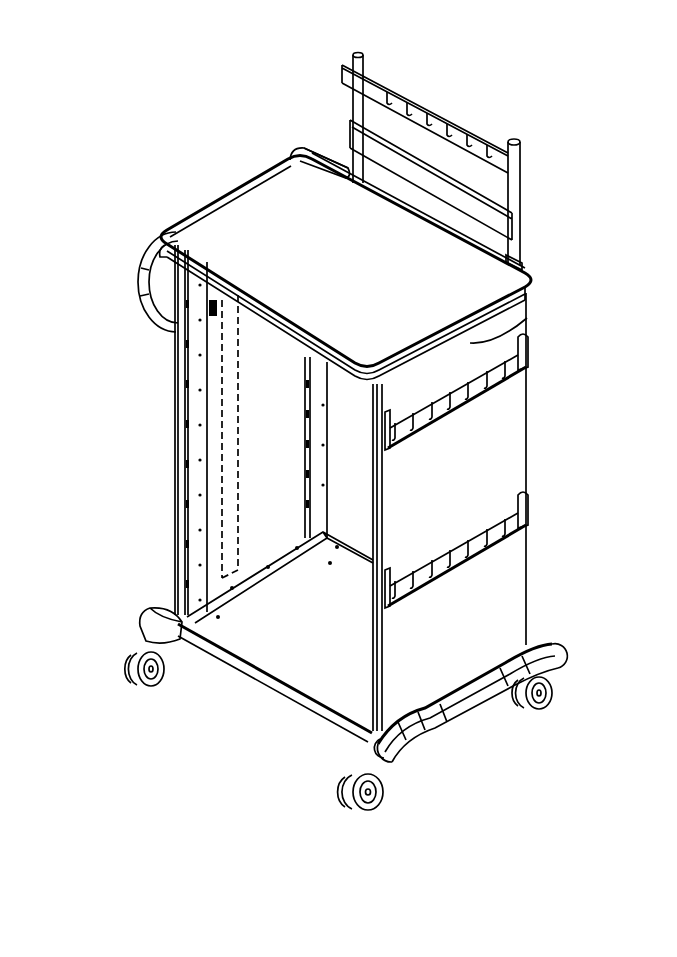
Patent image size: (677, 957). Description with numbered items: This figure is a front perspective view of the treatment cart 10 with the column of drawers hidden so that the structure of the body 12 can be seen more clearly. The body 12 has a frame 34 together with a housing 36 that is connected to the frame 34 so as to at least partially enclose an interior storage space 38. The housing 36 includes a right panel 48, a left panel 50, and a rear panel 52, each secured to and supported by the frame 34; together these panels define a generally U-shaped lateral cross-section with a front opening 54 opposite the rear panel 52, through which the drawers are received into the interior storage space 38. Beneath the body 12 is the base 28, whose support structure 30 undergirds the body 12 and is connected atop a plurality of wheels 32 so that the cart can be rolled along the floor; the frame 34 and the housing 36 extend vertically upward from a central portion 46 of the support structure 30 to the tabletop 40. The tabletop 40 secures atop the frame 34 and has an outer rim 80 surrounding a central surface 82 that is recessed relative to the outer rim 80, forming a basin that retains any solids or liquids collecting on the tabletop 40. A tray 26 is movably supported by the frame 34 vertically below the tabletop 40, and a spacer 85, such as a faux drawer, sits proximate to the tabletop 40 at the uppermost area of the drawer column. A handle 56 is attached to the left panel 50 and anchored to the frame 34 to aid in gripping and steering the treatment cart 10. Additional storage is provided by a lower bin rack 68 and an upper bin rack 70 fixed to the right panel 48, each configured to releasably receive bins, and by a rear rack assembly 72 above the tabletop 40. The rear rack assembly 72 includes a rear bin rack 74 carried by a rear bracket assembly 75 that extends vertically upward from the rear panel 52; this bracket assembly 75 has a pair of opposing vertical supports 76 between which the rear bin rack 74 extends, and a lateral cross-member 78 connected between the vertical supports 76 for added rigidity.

The treatment cart 10 is at (152, 76).
The body 12 is at (603, 410).
The tray 26 is at (470, 343).
The base 28 is at (570, 658).
The support structure 30 is at (459, 715).
The wheels 32 is at (166, 666).
The frame 34 is at (320, 475).
The housing 36 is at (511, 569).
The interior storage space 38 is at (280, 577).
The tabletop 40 is at (289, 151).
The central portion 46 is at (317, 670).
The right panel 48 is at (463, 613).
The left panel 50 is at (260, 362).
The rear panel 52 is at (357, 448).
The front opening 54 is at (195, 524).
The handle 56 is at (141, 270).
The lower bin rack 68 is at (530, 512).
The upper bin rack 70 is at (530, 357).
The rear rack assembly 72 is at (541, 160).
The rear bin rack 74 is at (413, 105).
The rear bracket assembly 75 is at (524, 246).
The vertical supports 76 is at (350, 99).
The lateral cross-member 78 is at (433, 163).
The outer rim 80 is at (225, 196).
The central surface 82 is at (292, 207).
The spacer 85 is at (230, 305).